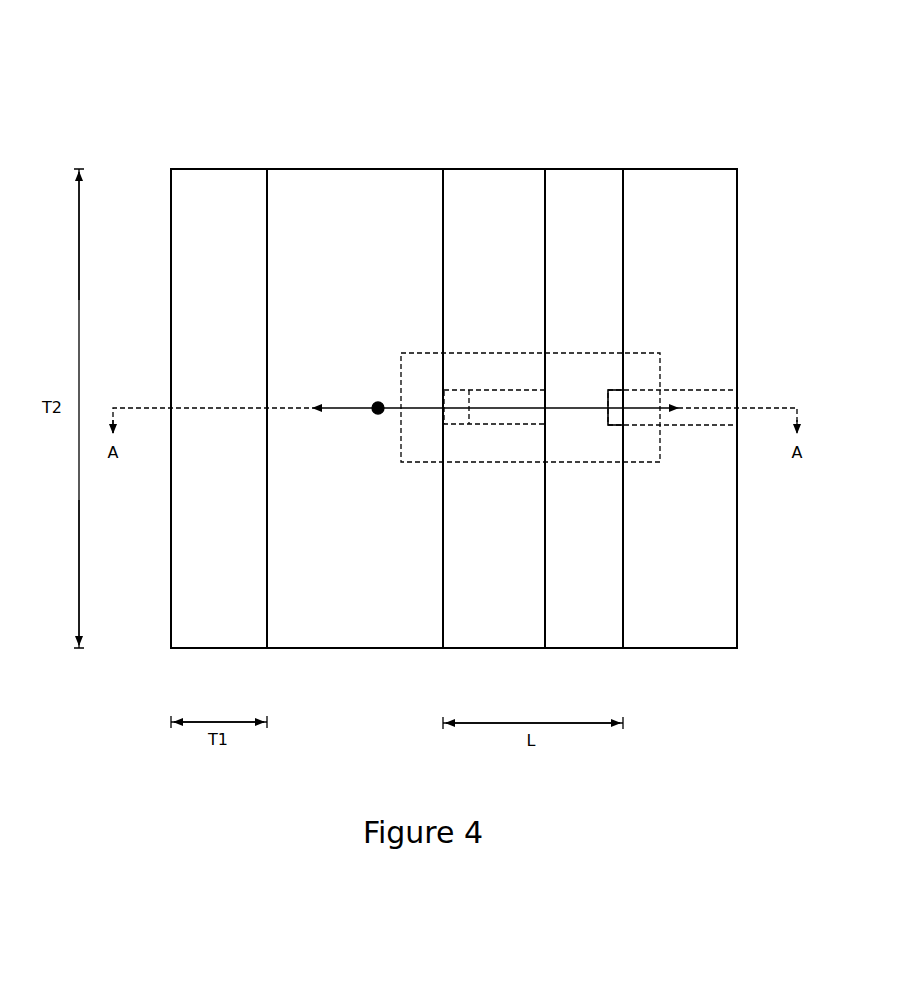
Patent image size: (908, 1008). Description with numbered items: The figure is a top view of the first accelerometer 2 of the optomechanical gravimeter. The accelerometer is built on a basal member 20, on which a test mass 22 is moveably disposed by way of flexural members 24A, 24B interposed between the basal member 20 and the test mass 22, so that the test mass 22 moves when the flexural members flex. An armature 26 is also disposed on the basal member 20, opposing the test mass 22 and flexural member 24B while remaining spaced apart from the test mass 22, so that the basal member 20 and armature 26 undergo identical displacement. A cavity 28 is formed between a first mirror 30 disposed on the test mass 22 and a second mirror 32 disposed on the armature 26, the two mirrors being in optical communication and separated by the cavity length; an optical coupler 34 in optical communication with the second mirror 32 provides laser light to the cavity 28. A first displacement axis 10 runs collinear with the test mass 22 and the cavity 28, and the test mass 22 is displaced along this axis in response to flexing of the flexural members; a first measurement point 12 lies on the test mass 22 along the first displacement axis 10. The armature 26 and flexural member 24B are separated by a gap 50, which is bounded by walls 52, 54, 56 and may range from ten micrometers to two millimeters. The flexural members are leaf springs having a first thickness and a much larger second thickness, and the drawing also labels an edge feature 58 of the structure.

The first accelerometer 2 is at (37, 89).
The first displacement axis 10 is at (350, 410).
The first measurement point 12 is at (376, 402).
The basal member 20 is at (589, 185).
The test mass 22 is at (353, 185).
The flexural member 24A is at (186, 572).
The flexural member 24B is at (498, 632).
The armature 26 is at (713, 185).
The cavity 28 is at (660, 368).
The first mirror 30 is at (453, 390).
The second mirror 32 is at (612, 425).
The optical coupler 34 is at (693, 425).
The gap 50 is at (570, 188).
The wall 52 is at (543, 188).
The wall 54 is at (623, 188).
The wall 56 is at (587, 632).
The outer edge 58 is at (738, 572).